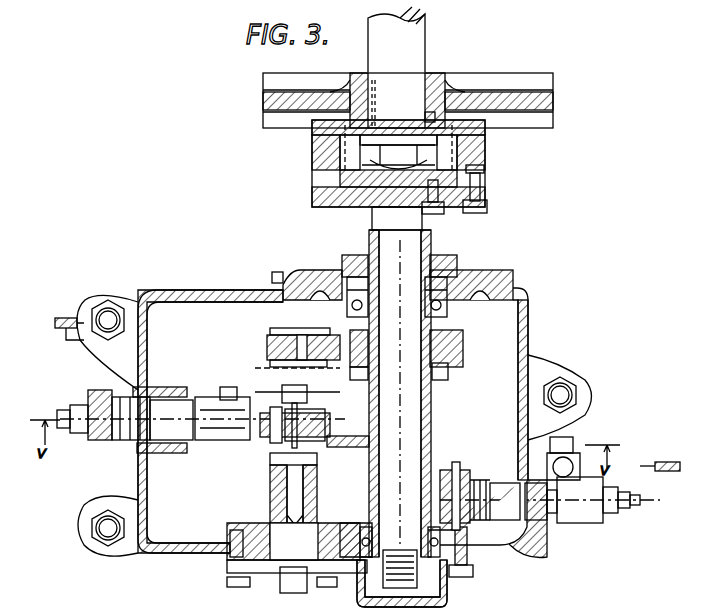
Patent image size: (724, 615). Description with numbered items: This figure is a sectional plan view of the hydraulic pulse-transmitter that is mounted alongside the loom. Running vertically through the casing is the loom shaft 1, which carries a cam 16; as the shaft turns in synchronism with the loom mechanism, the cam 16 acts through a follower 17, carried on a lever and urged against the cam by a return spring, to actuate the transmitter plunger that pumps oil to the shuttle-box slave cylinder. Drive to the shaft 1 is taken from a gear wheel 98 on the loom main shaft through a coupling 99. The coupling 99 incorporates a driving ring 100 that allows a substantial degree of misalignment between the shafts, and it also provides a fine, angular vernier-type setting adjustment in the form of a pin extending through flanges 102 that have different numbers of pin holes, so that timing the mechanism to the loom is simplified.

The loom shaft 1 is at (403, 248).
The cam 16 is at (350, 337).
The follower 17 is at (277, 333).
The gear wheel 98 is at (488, 100).
The coupling 99 is at (495, 133).
The driving ring 100 is at (357, 143).
The flanges 102 is at (466, 203).